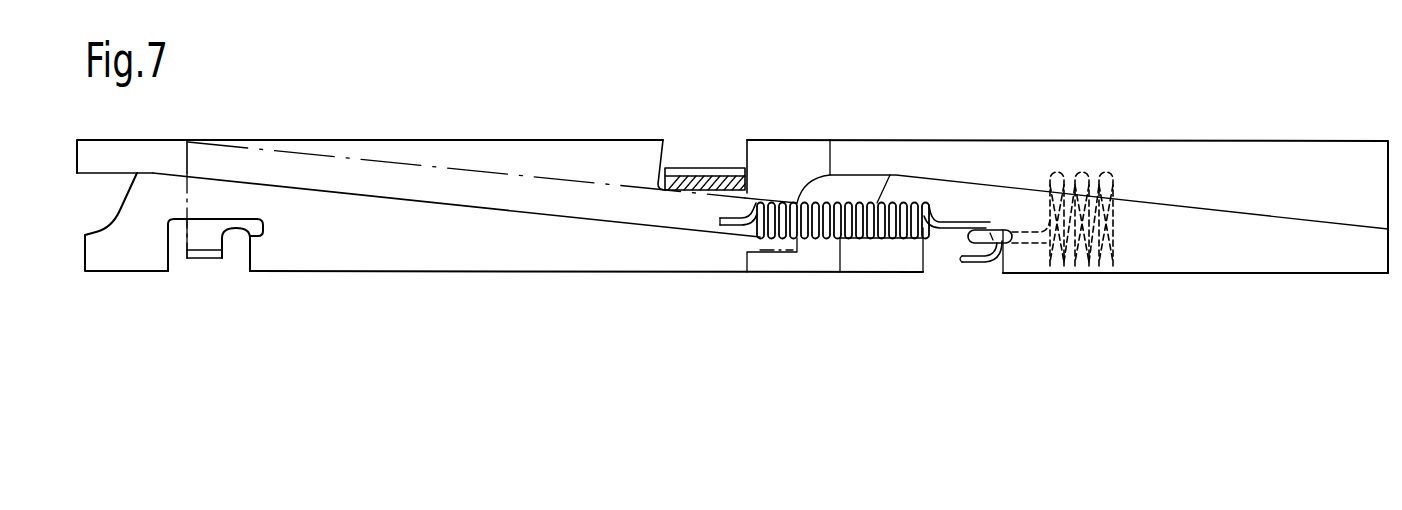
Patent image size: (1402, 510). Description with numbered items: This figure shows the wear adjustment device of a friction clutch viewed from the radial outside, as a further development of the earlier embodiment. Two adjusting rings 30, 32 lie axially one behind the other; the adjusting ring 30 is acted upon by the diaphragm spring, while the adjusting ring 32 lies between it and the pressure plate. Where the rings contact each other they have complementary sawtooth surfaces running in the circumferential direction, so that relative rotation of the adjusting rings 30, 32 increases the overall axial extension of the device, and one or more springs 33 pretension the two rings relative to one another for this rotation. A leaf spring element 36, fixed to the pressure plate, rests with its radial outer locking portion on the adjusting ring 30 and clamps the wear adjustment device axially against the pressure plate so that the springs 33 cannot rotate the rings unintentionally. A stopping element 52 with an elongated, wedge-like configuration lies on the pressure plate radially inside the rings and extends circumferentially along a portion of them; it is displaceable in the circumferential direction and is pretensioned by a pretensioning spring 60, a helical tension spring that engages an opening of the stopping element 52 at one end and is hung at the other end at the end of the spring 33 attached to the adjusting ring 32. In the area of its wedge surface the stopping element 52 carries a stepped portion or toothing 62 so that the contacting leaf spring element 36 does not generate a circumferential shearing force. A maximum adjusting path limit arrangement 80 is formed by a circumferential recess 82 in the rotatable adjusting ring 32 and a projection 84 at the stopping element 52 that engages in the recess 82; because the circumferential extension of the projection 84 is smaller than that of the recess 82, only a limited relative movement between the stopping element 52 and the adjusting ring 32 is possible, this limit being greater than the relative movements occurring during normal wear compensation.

The adjusting ring 30 is at (1240, 150).
The adjusting ring 32 is at (1257, 263).
The spring 33 is at (1068, 268).
The leaf spring element 36 is at (688, 172).
The stopping element 52 is at (513, 164).
The pretensioning spring 60 is at (890, 240).
The stepped portion or toothing 62 is at (393, 162).
The maximum adjusting path limit arrangement 80 is at (198, 334).
The circumferential recess 82 is at (175, 265).
The projection 84 is at (224, 262).